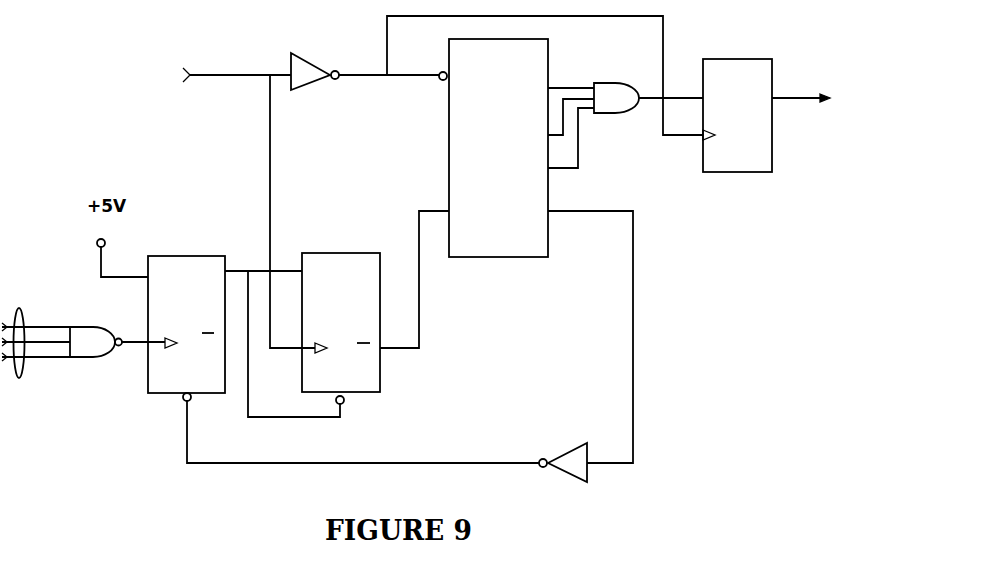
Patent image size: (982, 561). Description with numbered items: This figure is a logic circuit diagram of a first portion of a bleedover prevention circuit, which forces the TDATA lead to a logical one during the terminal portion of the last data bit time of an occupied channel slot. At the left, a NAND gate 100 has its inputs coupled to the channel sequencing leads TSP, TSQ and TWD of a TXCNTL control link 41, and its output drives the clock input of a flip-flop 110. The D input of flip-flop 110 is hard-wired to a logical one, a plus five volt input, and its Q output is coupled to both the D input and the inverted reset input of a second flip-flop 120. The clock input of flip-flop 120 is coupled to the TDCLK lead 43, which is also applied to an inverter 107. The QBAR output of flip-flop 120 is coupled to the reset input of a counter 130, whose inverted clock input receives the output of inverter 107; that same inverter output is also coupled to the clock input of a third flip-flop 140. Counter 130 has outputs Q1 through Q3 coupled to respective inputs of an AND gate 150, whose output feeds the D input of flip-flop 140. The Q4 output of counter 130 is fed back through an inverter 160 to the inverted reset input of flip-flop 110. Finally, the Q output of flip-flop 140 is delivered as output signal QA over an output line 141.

The TXCNTL control link 41 is at (22, 375).
The TDCLK lead 43 is at (278, 72).
The NAND gate 100 is at (97, 313).
The inverter 107 is at (313, 62).
The flip-flop 110 is at (180, 255).
The flip-flop 120 is at (320, 252).
The counter 130 is at (448, 152).
The flip-flop 140 is at (740, 172).
The output line 141 is at (802, 105).
The AND gate 150 is at (608, 113).
The inverter 160 is at (570, 453).